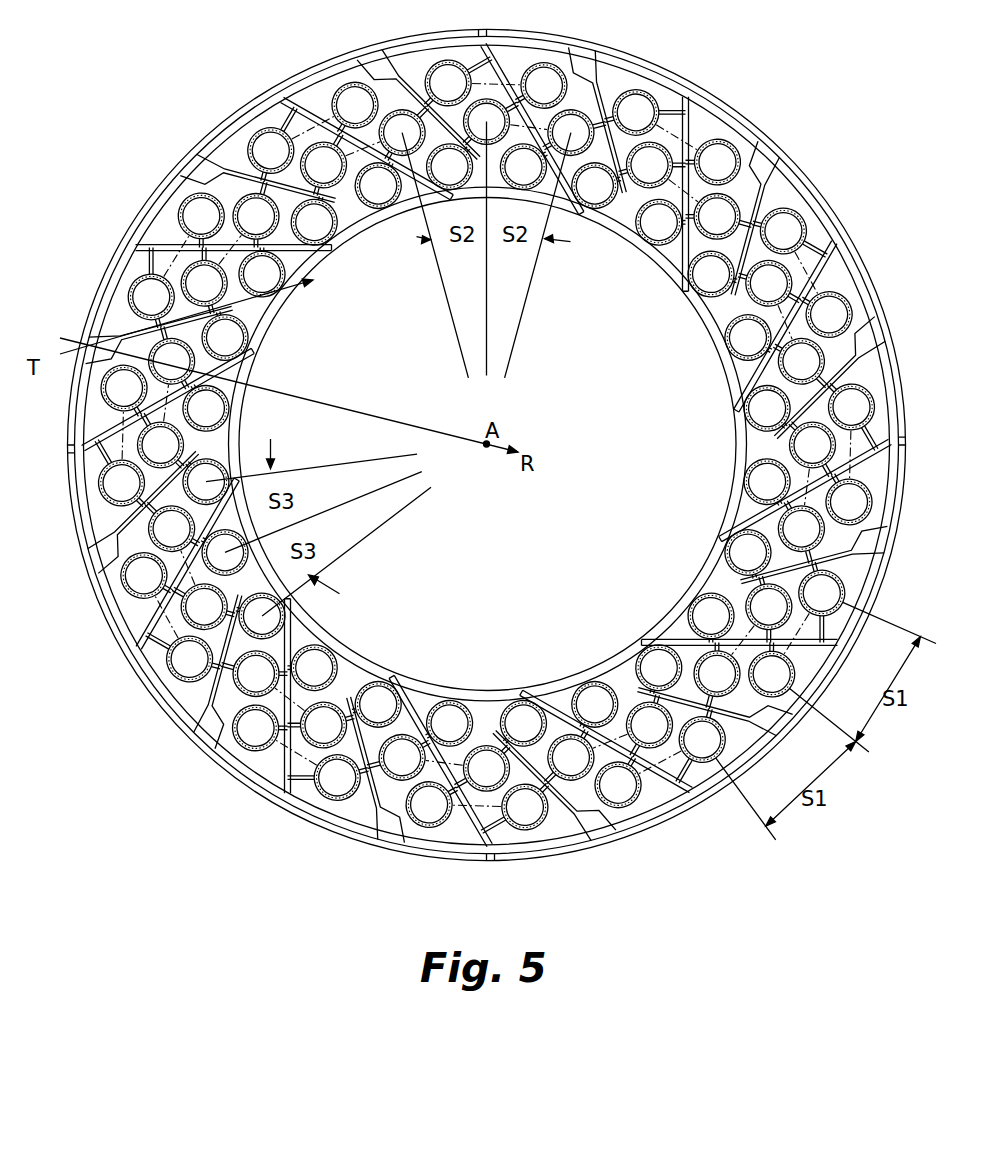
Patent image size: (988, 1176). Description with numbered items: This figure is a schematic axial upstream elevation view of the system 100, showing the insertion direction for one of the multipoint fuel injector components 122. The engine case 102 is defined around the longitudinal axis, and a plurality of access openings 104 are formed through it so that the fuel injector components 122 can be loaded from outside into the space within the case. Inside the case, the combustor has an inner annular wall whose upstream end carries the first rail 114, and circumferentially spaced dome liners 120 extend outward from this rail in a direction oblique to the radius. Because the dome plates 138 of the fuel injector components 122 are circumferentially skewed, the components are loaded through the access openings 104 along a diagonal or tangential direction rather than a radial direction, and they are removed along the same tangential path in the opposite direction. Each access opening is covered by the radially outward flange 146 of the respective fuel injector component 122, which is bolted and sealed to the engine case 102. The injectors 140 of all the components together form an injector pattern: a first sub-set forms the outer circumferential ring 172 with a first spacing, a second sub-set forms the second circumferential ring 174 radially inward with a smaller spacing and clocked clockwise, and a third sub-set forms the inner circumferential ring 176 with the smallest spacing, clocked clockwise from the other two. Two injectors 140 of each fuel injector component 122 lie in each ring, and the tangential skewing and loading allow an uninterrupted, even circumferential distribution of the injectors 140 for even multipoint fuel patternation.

The system 100 is at (856, 116).
The engine case 102 is at (279, 90).
The access openings 104 is at (106, 298).
The first rail 114 is at (617, 226).
The dome liners 120 is at (687, 150).
The fuel injector components 122 is at (177, 623).
The dome plates 138 is at (106, 512).
The injectors 140 is at (638, 104).
The radially outward flange 146 is at (304, 65).
The outer circumferential ring 172 is at (171, 249).
The second circumferential ring 174 is at (800, 305).
The inner circumferential ring 176 is at (742, 522).